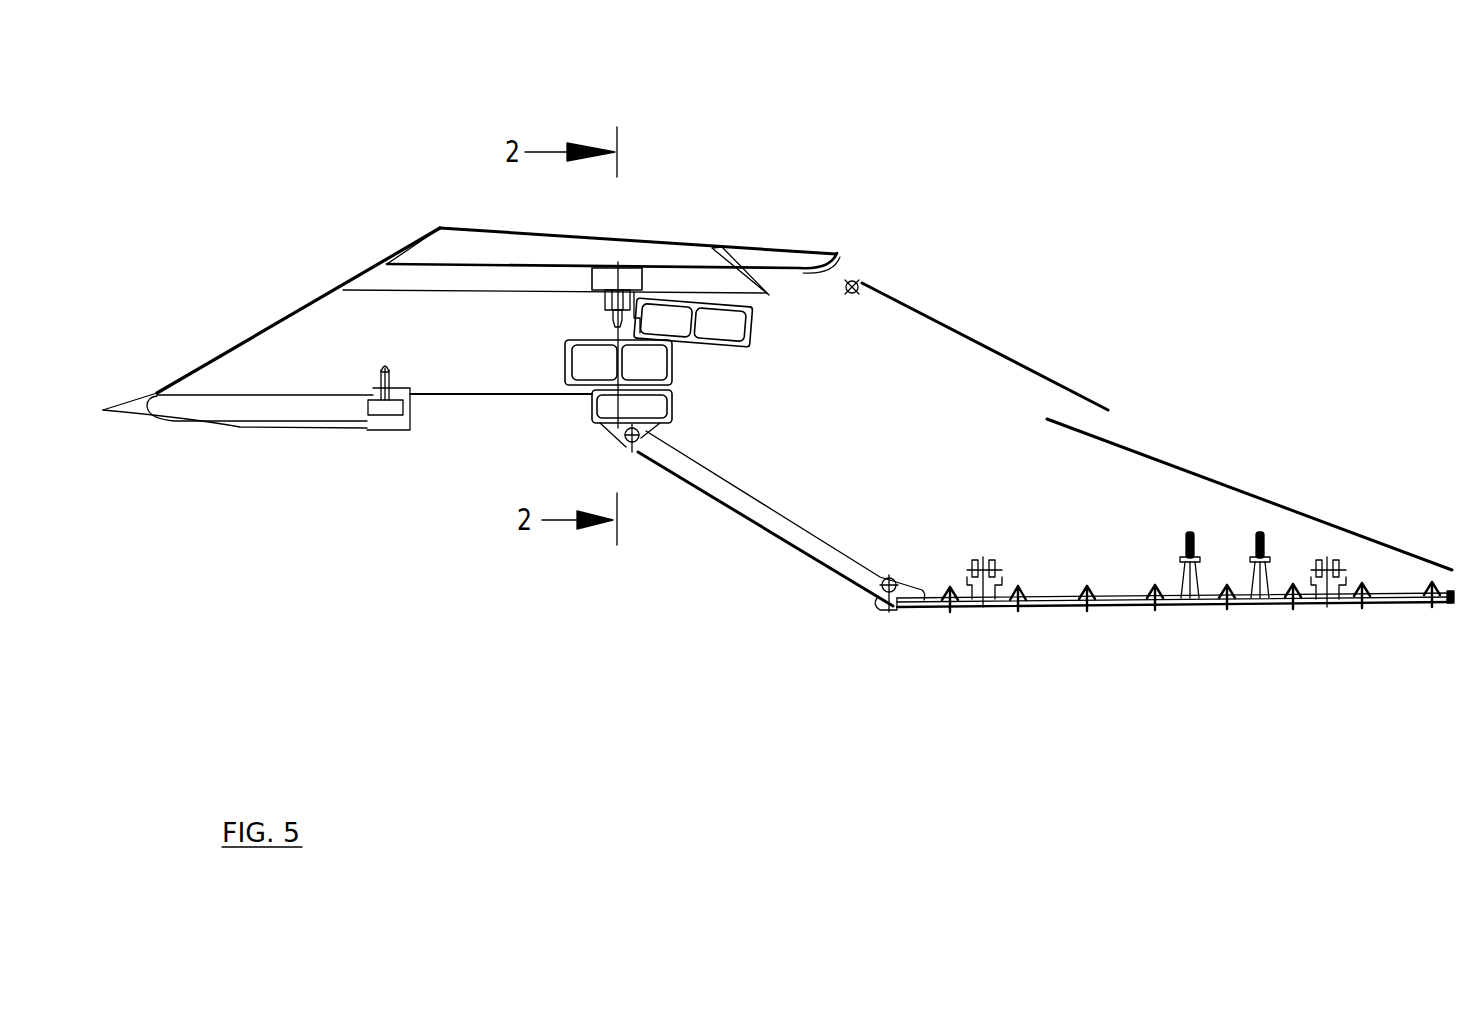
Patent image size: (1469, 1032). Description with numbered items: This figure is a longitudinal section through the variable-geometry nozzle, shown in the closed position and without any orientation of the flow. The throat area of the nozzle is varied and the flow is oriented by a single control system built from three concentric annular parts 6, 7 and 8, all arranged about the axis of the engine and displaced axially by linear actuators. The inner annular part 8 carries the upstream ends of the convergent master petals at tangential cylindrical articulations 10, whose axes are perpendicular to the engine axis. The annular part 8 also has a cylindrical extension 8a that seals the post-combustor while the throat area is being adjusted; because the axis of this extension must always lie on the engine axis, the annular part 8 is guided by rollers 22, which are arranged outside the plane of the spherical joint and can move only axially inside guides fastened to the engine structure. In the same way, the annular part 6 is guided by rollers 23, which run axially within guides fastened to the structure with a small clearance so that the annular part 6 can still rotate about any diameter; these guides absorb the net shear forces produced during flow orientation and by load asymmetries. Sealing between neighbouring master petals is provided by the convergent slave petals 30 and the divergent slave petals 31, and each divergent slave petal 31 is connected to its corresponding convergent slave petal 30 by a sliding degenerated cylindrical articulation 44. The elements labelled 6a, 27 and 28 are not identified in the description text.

The annular part 6 is at (765, 338).
The spray nozzle 6a is at (732, 298).
The annular part 7 is at (680, 370).
The inner annular part 8 is at (685, 424).
The cylindrical extension 8a is at (476, 399).
The tangential cylindrical articulation 10 is at (638, 448).
The roller 22 is at (380, 407).
The roller 23 is at (626, 277).
The boom arm 27 is at (920, 304).
The boom arm 28 is at (1254, 490).
The convergent slave petal 30 is at (800, 556).
The divergent slave petal 31 is at (1098, 608).
The sliding degenerated cylindrical articulation 44 is at (880, 601).